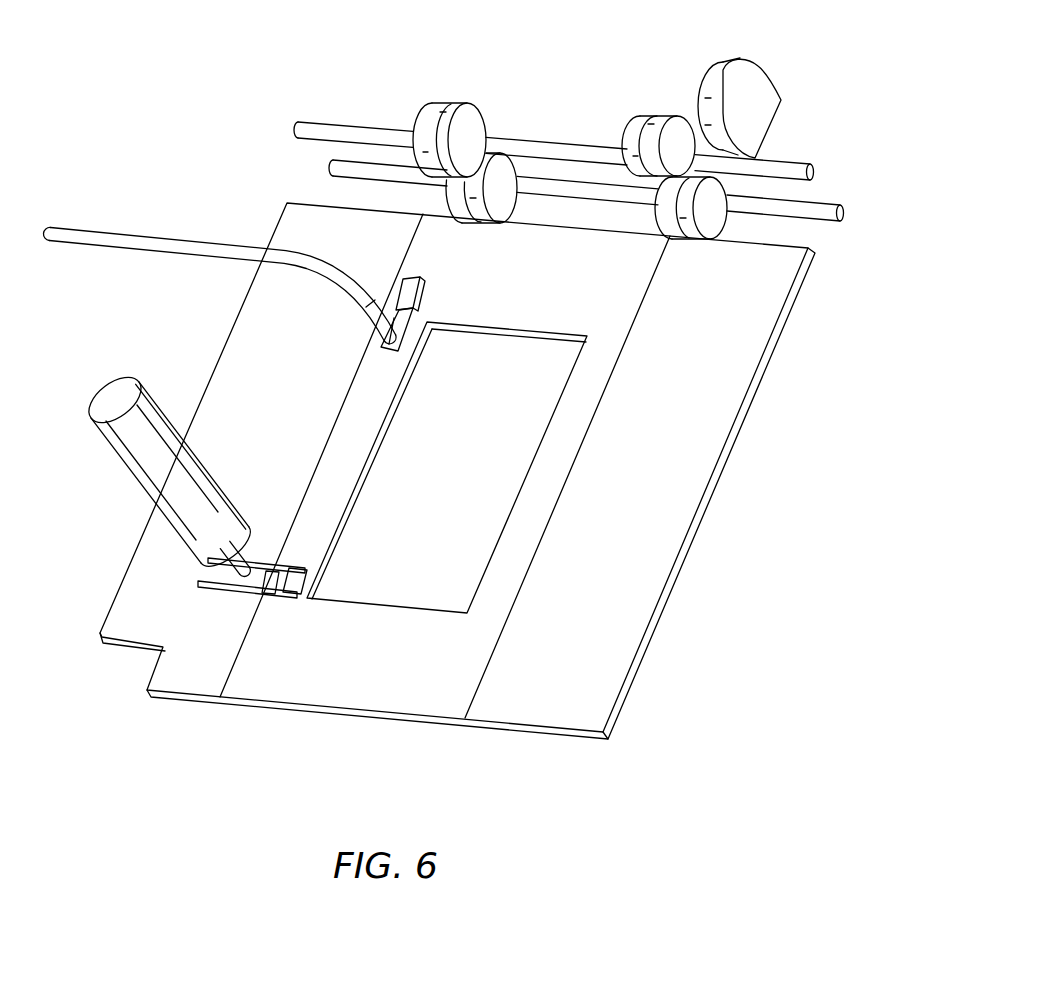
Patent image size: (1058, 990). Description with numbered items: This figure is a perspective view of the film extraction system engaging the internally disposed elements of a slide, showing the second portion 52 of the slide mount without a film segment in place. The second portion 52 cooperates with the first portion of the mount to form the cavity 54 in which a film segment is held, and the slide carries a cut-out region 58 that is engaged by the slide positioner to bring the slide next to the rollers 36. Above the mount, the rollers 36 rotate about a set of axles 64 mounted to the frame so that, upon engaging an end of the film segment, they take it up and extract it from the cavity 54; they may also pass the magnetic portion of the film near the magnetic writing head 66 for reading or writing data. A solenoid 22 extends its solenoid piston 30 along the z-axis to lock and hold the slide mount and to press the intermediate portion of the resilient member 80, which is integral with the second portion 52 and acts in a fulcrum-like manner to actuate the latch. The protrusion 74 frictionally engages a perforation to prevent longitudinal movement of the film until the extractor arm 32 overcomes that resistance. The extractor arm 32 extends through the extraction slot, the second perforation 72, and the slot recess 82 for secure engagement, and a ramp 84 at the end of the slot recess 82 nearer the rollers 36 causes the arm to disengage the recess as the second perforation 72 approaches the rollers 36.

The solenoid 22 is at (138, 455).
The solenoid piston 30 is at (243, 560).
The extractor arm 32 is at (155, 242).
The roller 36 is at (477, 118).
The second portion 52 is at (607, 673).
The cavity 54 is at (455, 722).
The cut-out region 58 is at (121, 648).
The axles 64 is at (813, 172).
The magnetic writing head 66 is at (766, 73).
The second perforation 72 is at (288, 588).
The protrusion 74 is at (304, 570).
The resilient member 80 is at (220, 578).
The slot recess 82 is at (401, 323).
The ramp 84 is at (420, 290).